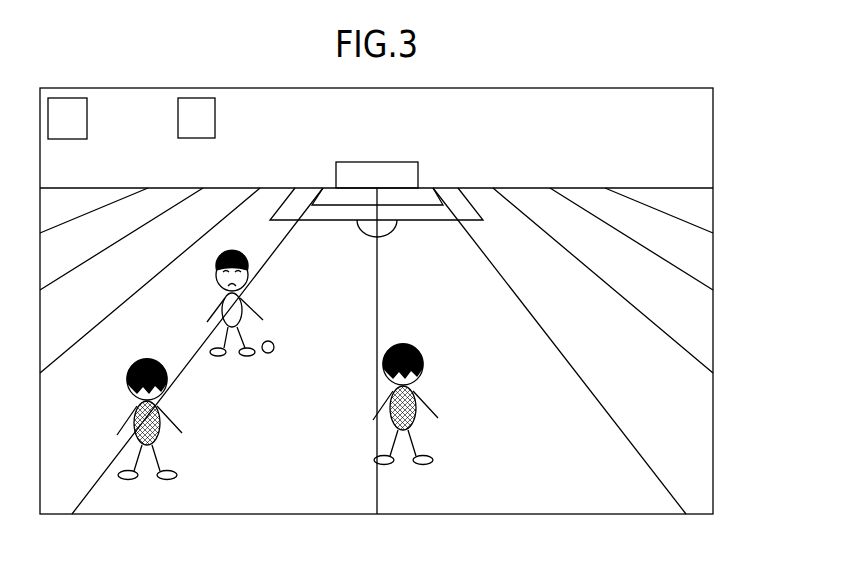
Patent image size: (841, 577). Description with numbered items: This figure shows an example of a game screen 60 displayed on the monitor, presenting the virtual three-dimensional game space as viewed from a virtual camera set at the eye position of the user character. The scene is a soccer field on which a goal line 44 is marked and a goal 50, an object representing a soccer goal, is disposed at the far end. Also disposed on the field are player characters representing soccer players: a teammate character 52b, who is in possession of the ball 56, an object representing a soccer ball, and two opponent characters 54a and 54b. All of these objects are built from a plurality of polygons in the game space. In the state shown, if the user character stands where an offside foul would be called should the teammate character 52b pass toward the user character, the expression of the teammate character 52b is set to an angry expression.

The goal line 44 is at (576, 187).
The goal 50 is at (398, 160).
The teammate character 52b is at (237, 260).
The opponent character 54a is at (148, 360).
The opponent character 54b is at (406, 345).
The ball 56 is at (275, 347).
The game screen 60 is at (715, 457).